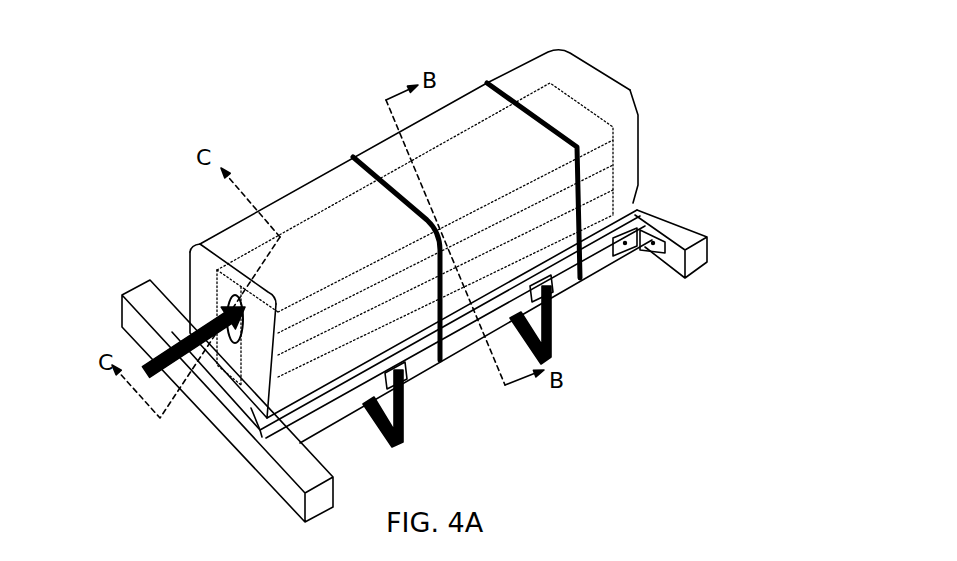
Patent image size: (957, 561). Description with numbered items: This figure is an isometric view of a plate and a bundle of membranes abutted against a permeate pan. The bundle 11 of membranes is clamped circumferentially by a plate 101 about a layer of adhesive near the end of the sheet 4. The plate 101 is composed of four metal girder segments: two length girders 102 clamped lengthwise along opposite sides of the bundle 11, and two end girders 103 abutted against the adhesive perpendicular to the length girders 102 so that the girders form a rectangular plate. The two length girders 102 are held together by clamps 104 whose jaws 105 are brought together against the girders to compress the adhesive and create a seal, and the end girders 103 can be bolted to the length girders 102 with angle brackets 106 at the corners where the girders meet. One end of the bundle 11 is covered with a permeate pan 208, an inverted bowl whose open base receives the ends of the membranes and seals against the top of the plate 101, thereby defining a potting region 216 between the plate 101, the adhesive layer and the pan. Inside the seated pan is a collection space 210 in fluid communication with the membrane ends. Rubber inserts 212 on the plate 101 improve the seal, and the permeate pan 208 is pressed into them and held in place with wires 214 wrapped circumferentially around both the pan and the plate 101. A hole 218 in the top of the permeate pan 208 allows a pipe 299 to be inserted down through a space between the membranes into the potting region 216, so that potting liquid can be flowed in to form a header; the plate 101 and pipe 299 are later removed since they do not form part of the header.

The end of the sheet 4 is at (383, 253).
The bundle 11 is at (318, 287).
The plate 101 is at (675, 222).
The length girders 102 is at (598, 252).
The end girders 103 is at (207, 408).
The clamps 104 is at (408, 447).
The jaws 105 is at (407, 372).
The angle brackets 106 is at (660, 253).
The permeate pan 208 is at (213, 239).
The collection space 210 is at (536, 76).
The rubber inserts 212 is at (634, 204).
The wires 214 is at (480, 85).
The potting region 216 is at (190, 292).
The hole 218 is at (226, 316).
The pipe 299 is at (150, 360).